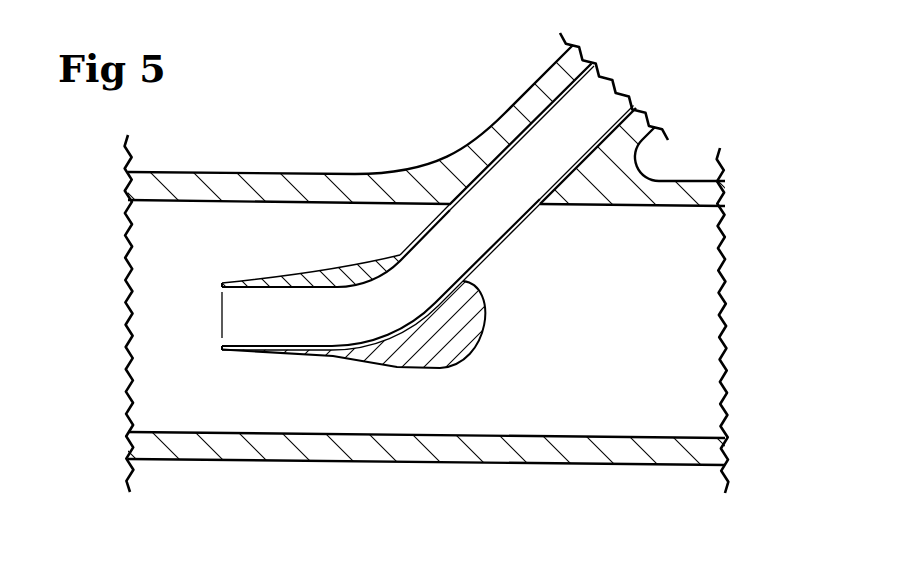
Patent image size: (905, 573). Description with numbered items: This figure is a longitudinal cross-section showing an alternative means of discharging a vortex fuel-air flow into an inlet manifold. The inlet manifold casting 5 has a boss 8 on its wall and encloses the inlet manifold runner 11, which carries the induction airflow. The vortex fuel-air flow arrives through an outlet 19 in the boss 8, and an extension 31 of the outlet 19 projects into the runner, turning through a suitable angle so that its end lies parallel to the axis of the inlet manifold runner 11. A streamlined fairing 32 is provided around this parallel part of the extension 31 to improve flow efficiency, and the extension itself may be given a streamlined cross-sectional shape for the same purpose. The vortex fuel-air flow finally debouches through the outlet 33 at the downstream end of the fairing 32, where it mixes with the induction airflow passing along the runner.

The inlet manifold casting 5 is at (288, 452).
The boss 8 is at (532, 98).
The inlet manifold runner 11 is at (658, 308).
The outlet 19 is at (533, 163).
The extension 31 is at (478, 233).
The streamlined fairing 32 is at (452, 333).
The outlet 33 is at (237, 318).